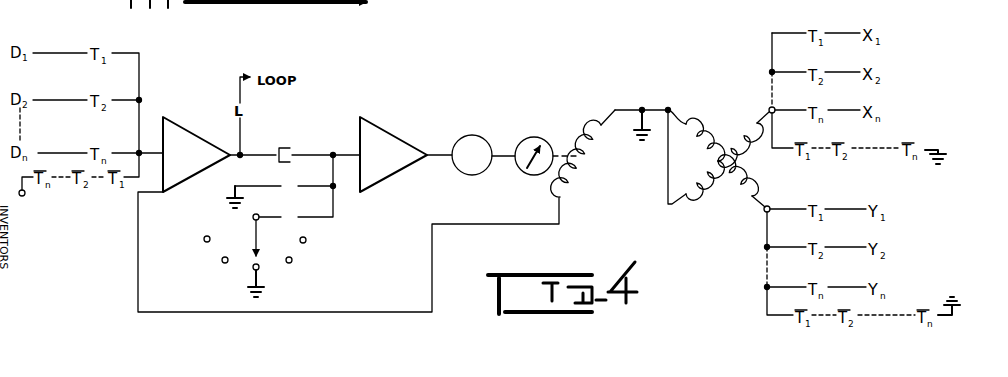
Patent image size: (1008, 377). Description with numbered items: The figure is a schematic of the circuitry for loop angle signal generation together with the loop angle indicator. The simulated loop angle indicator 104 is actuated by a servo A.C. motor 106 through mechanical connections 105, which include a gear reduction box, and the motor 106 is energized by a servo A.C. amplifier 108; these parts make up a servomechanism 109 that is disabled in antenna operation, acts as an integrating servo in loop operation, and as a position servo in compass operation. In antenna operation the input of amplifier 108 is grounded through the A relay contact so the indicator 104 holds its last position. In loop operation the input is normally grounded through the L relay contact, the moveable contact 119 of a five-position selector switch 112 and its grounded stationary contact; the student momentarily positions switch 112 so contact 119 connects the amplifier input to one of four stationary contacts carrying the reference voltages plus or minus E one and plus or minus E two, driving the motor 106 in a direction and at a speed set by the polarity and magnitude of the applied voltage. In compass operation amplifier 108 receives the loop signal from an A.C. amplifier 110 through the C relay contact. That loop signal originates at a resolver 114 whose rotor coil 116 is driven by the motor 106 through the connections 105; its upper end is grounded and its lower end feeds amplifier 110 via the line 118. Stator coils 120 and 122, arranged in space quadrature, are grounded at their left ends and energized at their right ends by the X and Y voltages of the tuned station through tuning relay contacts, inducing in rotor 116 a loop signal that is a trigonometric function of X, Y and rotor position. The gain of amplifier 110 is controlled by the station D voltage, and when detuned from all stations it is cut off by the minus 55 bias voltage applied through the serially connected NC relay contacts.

The negative supply terminal 55 is at (20, 197).
The simulated loop angle indicator 104 is at (529, 137).
The mechanical connections 105 is at (505, 157).
The servo A.C. motor 106 is at (489, 118).
The servo A.C. amplifier 108 is at (382, 124).
The servomechanism 109 is at (372, 88).
The A.C. amplifier 110 is at (176, 124).
The five-position selector switch 112 is at (353, 278).
The resolver 114 is at (660, 90).
The rotor coil 116 is at (590, 170).
The line 118 is at (138, 234).
The moveable contact 119 is at (256, 227).
The stator coil 120 is at (700, 101).
The stator coil 122 is at (699, 190).